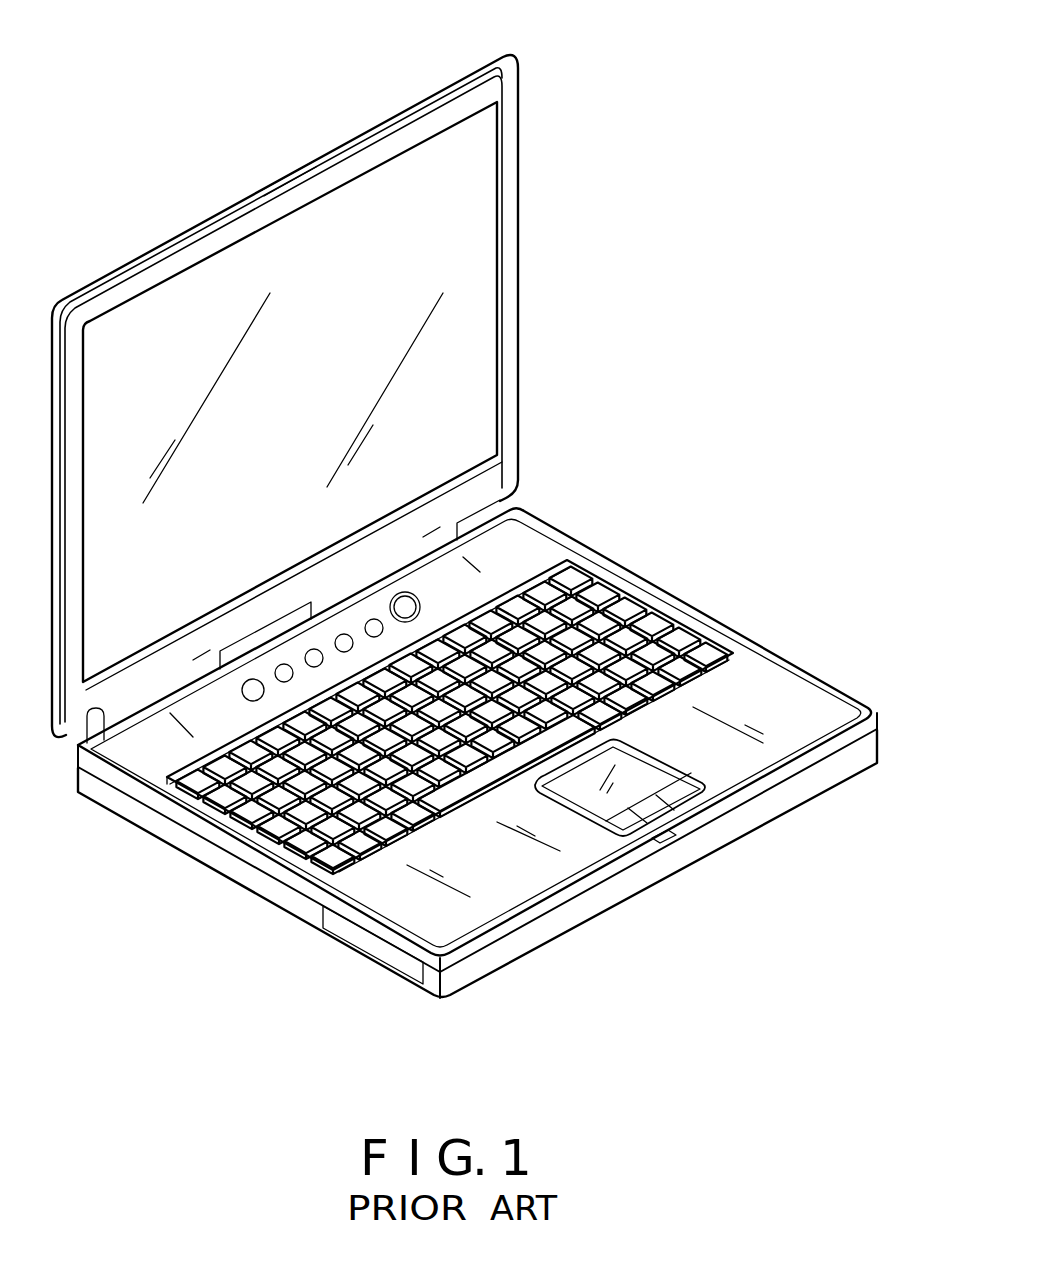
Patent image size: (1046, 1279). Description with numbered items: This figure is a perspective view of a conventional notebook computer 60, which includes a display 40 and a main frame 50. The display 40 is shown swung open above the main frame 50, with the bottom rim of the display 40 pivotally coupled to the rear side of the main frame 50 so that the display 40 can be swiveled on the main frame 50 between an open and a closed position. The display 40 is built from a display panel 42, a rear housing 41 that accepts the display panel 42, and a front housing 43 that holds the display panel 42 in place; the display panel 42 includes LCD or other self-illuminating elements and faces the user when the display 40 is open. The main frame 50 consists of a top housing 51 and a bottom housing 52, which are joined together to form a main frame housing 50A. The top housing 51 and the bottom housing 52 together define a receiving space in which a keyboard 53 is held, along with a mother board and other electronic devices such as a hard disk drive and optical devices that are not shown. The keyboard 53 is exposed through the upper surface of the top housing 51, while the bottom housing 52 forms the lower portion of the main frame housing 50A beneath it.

The display 40 is at (548, 45).
The rear housing 41 is at (180, 238).
The display panel 42 is at (333, 227).
The front housing 43 is at (407, 133).
The main frame 50 is at (542, 486).
The main frame housing 50A is at (868, 822).
The top housing 51 is at (740, 811).
The bottom housing 52 is at (680, 860).
The keyboard 53 is at (288, 815).
The notebook computer 60 is at (681, 386).